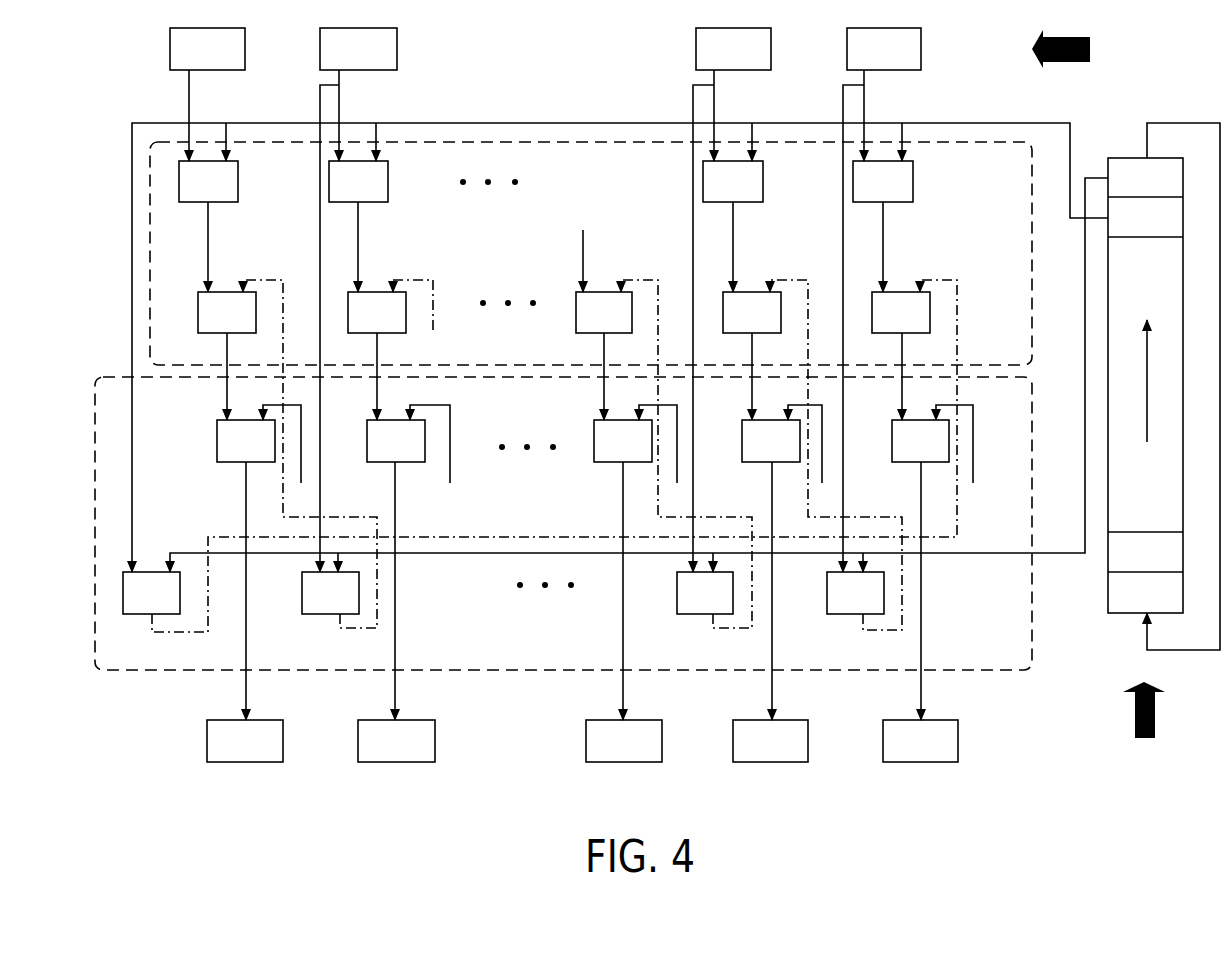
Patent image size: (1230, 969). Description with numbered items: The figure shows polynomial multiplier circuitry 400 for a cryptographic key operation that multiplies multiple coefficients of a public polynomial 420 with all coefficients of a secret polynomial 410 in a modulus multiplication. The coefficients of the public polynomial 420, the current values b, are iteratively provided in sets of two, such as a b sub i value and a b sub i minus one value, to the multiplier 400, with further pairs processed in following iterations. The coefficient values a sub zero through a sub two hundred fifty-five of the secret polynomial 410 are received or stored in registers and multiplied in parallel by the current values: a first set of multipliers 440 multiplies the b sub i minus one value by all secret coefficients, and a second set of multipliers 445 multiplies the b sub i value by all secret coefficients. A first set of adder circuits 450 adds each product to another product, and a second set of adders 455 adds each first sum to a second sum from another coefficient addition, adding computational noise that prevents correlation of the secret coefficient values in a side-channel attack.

The polynomial multiplier circuitry 400 is at (92, 80).
The secret polynomial 410 is at (1126, 337).
The public polynomial 420 is at (1144, 754).
The first set of multipliers 440 is at (179, 183).
The second set of multipliers 445 is at (123, 593).
The first set of adder circuits 450 is at (198, 311).
The second set of adders 455 is at (217, 441).